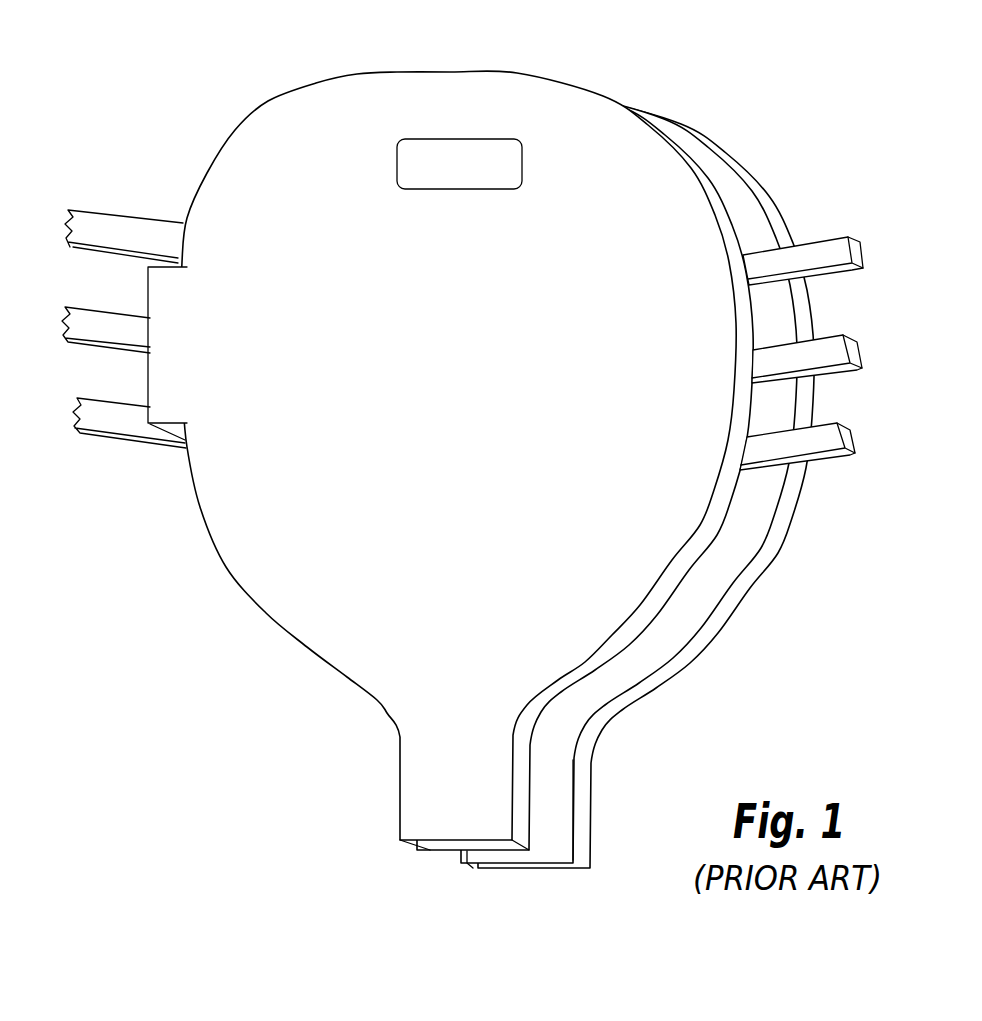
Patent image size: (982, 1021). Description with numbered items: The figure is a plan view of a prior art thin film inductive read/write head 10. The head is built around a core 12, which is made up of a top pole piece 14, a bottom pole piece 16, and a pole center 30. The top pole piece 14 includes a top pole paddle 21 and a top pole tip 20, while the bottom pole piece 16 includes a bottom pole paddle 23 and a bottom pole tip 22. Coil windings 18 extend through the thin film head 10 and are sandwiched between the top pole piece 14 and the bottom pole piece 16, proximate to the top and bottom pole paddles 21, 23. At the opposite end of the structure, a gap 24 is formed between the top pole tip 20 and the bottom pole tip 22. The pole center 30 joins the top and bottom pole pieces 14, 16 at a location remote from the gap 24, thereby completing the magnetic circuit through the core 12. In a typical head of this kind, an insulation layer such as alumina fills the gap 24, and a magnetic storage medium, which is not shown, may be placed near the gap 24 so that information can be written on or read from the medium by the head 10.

The thin film head 10 is at (497, 504).
The core 12 is at (497, 462).
The top pole piece 14 is at (333, 110).
The bottom pole piece 16 is at (730, 540).
The coil windings 18 is at (862, 257).
The top pole tip 20 is at (430, 845).
The top pole paddle 21 is at (222, 180).
The bottom pole tip 22 is at (537, 868).
The bottom pole paddle 23 is at (738, 193).
The gap 24 is at (553, 825).
The pole center 30 is at (458, 152).